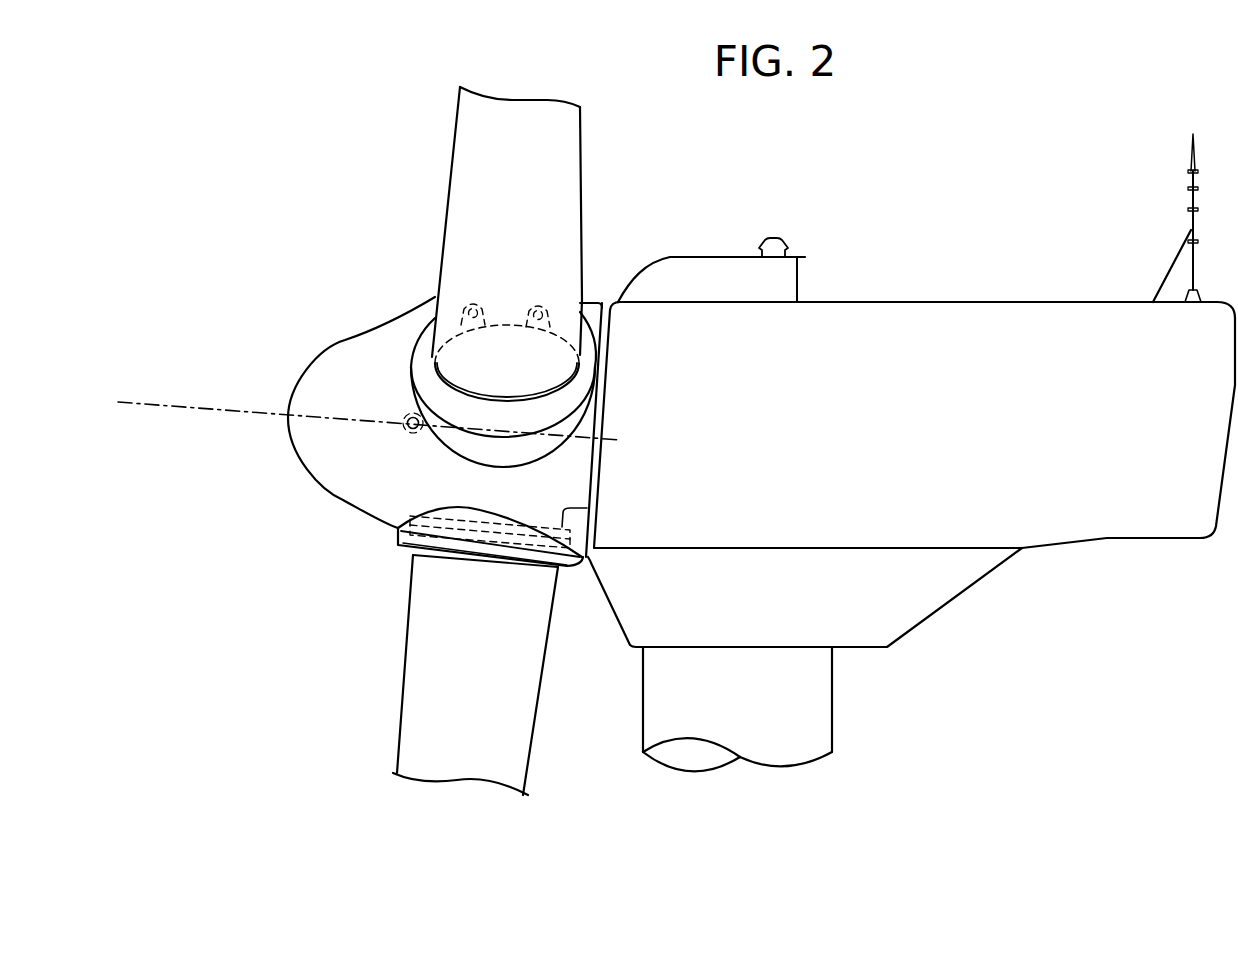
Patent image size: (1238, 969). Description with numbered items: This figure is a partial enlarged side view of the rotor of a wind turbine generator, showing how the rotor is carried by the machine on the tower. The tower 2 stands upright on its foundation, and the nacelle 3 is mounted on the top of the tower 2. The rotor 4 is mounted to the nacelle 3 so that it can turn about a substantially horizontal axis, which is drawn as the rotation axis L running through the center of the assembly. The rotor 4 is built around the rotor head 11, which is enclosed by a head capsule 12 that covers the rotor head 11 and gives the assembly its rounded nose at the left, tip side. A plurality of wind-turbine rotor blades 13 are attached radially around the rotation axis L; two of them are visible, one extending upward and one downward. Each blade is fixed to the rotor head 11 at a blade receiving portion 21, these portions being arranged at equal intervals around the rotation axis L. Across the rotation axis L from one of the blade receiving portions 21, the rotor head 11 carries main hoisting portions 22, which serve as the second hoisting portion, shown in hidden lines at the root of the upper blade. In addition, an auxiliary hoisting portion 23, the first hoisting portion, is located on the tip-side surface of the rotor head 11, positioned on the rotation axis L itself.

The tower 2 is at (826, 720).
The nacelle 3 is at (1001, 303).
The rotor 4 is at (304, 462).
The rotor head 11 is at (420, 523).
The head capsule 12 is at (327, 372).
The wind-turbine rotor blade 13 is at (455, 198).
The blade receiving portion 21 is at (397, 530).
The main hoisting portion 22 is at (474, 300).
The auxiliary hoisting portion 23 is at (405, 432).
The rotation axis L is at (152, 400).